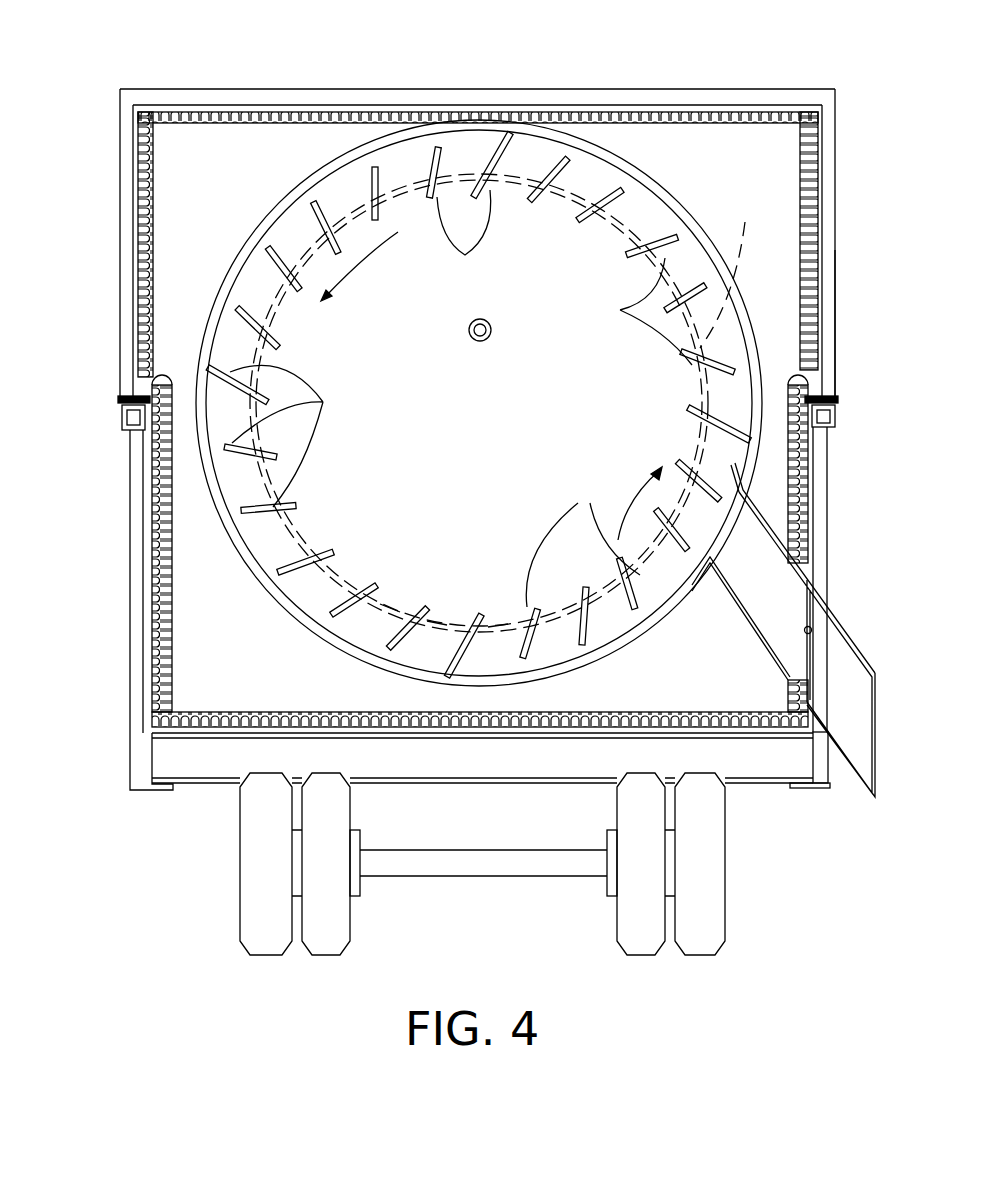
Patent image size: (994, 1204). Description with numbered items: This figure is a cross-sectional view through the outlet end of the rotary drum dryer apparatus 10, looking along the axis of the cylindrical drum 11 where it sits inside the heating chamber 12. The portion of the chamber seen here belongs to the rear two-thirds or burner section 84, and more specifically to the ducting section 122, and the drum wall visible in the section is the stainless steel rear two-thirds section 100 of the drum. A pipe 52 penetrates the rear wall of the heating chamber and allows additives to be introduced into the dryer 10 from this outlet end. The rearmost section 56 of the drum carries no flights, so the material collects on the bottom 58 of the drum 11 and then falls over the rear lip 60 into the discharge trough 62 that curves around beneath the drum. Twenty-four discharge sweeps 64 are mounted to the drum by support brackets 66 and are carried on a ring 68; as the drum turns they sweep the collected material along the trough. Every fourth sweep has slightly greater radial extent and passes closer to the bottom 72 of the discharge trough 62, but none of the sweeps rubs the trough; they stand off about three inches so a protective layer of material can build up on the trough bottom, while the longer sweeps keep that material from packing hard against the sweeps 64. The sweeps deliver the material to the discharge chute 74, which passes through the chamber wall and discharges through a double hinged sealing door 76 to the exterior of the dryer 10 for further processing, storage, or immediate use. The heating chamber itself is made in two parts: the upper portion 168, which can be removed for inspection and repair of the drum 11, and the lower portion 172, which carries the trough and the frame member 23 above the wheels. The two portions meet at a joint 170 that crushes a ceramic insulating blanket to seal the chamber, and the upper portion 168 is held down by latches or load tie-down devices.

The rotary drum dryer apparatus 10 is at (374, 84).
The cylindrical drum 11 is at (730, 273).
The heating chamber 12 is at (258, 89).
The trailer frame beam 23 is at (582, 760).
The pipe 52 is at (493, 330).
The rearmost section 56 is at (390, 608).
The bottom 58 is at (498, 625).
The rear lip 60 is at (437, 623).
The discharge trough 62 is at (265, 605).
The discharge sweeps 64 is at (461, 382).
The support brackets 66 is at (491, 398).
The ring 68 is at (283, 222).
The bottom of the discharge trough 72 is at (483, 677).
The discharge chute 74 is at (777, 660).
The double hinged sealing door 76 is at (822, 612).
The burner section 84 is at (836, 277).
The rear two-thirds section 100 is at (587, 200).
The ducting section 122 is at (185, 125).
The upper portion of the heating chamber 168 is at (120, 180).
The joint 170 is at (140, 395).
The lower portion of the heating chamber 172 is at (130, 558).